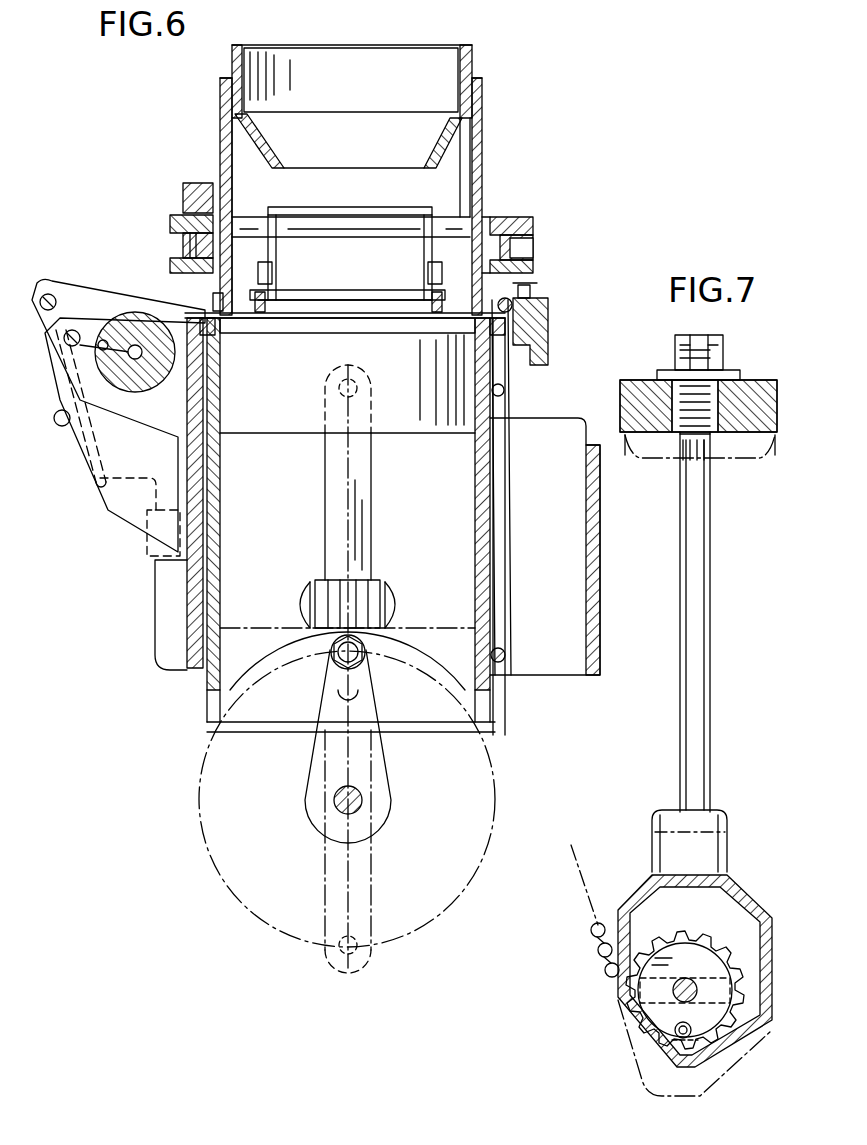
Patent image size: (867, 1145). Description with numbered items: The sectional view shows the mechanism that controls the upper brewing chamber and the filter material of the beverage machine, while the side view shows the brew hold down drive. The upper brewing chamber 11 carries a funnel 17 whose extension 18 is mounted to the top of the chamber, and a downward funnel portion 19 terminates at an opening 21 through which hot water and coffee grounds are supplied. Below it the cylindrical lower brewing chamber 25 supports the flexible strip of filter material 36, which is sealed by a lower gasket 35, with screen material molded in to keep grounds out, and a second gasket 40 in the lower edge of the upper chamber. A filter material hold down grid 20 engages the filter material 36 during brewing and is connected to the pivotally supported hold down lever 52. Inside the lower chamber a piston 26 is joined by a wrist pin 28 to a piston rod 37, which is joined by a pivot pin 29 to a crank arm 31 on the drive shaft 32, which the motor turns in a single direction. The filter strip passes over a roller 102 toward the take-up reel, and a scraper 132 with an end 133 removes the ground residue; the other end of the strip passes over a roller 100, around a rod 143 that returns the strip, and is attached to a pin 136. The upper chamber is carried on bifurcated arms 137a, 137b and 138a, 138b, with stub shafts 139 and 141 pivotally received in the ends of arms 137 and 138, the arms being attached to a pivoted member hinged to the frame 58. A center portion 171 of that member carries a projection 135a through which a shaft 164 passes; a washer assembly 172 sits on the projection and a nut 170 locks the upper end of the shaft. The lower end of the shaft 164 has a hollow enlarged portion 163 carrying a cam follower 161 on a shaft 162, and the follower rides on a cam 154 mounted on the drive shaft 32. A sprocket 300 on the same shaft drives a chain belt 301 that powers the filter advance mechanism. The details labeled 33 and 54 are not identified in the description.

In FIG. 6, the upper brewing chamber 11 is at (220, 140).
In FIG. 6, the funnel 17 is at (465, 58).
In FIG. 6, the extension 18 is at (484, 80).
In FIG. 6, the downward funnel portion 19 is at (432, 152).
In FIG. 6, the filter material hold down grid 20 is at (316, 296).
In FIG. 6, the opening 21 is at (296, 168).
In FIG. 6, the lower brewing chamber 25 is at (515, 430).
In FIG. 6, the piston 26 is at (268, 418).
In FIG. 6, the wrist pin 28 is at (350, 385).
In FIG. 6, the pivot pin 29 is at (366, 652).
In FIG. 6, the crank arm 31 is at (320, 737).
In FIG. 6, the drive shaft 32 is at (360, 796).
In FIG. 7, the drive shaft 32 is at (698, 985).
In FIG. 6, the crosshead 33 is at (388, 592).
In FIG. 6, the lower gasket 35 is at (222, 330).
In FIG. 6, the filter material 36 is at (308, 330).
In FIG. 6, the piston rod 37 is at (360, 462).
In FIG. 6, the second gasket 40 is at (212, 300).
In FIG. 6, the hold down lever 52 is at (346, 207).
In FIG. 6, the plate 54 is at (250, 215).
In FIG. 6, the frame 58 is at (185, 590).
In FIG. 6, the roller 100 is at (538, 284).
In FIG. 6, the roller 102 is at (48, 294).
In FIG. 6, the scraper 132 is at (95, 486).
In FIG. 6, the end of scraper 133 is at (58, 405).
In FIG. 7, the projection 135a is at (738, 378).
In FIG. 6, the pin 136 is at (492, 395).
In FIG. 6, the arm 137 is at (185, 205).
In FIG. 6, the bifurcated arm 137a is at (172, 222).
In FIG. 6, the bifurcated arm 137b is at (170, 266).
In FIG. 6, the arm 138 is at (505, 217).
In FIG. 6, the bifurcated arm 138a is at (534, 224).
In FIG. 6, the bifurcated arm 138b is at (534, 268).
In FIG. 6, the stub shaft 139 is at (180, 245).
In FIG. 6, the stub shaft 141 is at (520, 246).
In FIG. 6, the rod 143 is at (504, 665).
In FIG. 7, the cam 154 is at (705, 950).
In FIG. 7, the cam follower 161 is at (672, 1030).
In FIG. 7, the shaft 162 is at (690, 1045).
In FIG. 7, the hollow enlarged portion 163 is at (765, 920).
In FIG. 7, the shaft 164 is at (712, 572).
In FIG. 7, the nut 170 is at (720, 350).
In FIG. 7, the center portion 171 is at (672, 436).
In FIG. 7, the washer assembly 172 is at (665, 370).
In FIG. 7, the sprocket 300 is at (660, 925).
In FIG. 7, the chain belt 301 is at (591, 943).